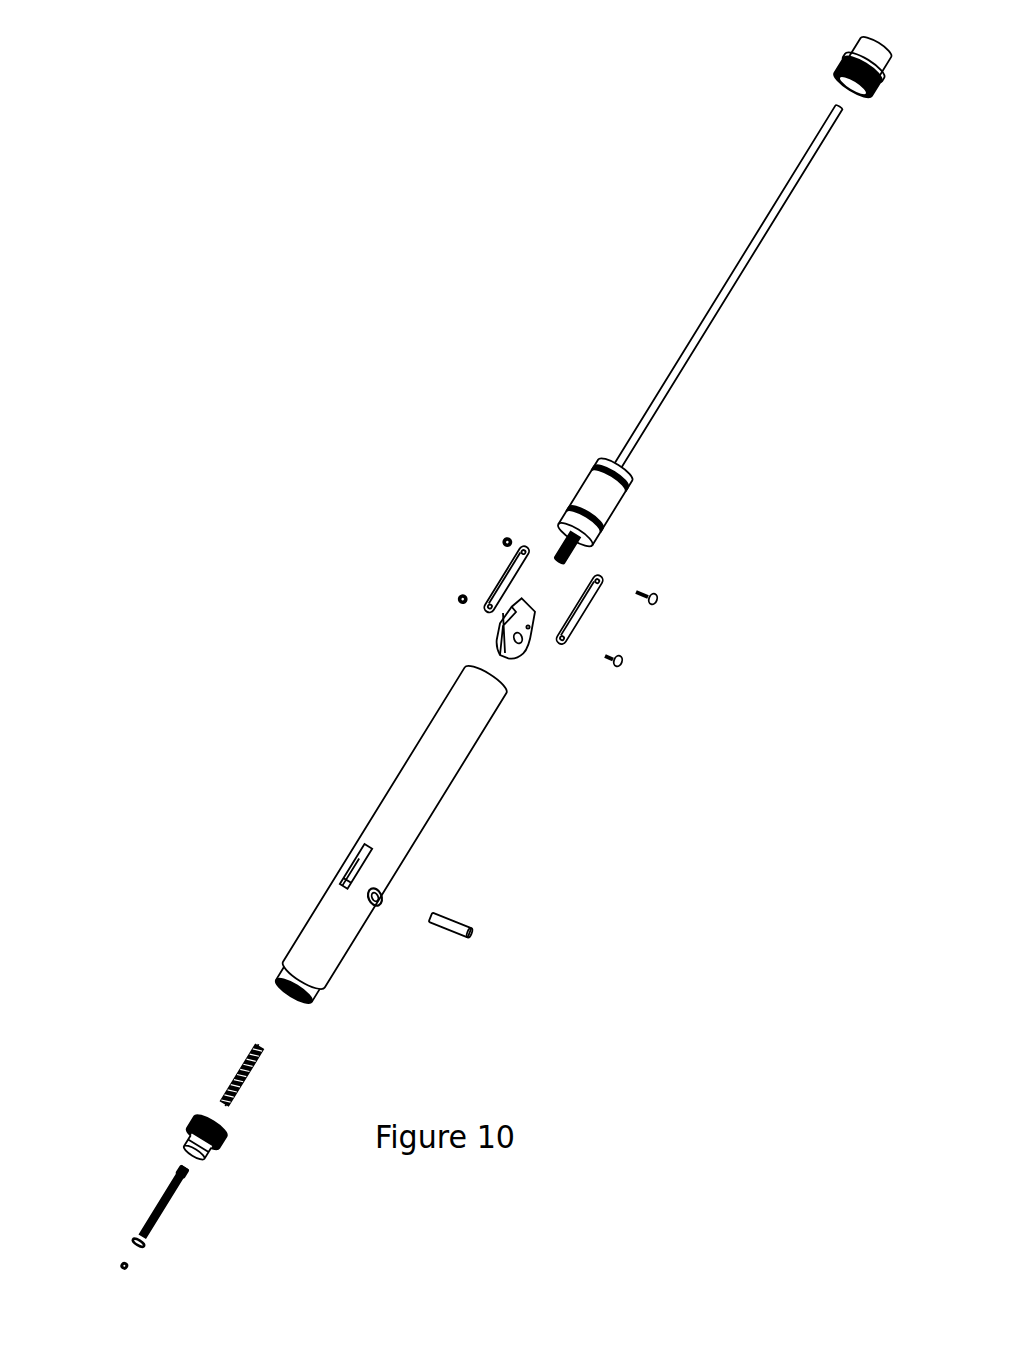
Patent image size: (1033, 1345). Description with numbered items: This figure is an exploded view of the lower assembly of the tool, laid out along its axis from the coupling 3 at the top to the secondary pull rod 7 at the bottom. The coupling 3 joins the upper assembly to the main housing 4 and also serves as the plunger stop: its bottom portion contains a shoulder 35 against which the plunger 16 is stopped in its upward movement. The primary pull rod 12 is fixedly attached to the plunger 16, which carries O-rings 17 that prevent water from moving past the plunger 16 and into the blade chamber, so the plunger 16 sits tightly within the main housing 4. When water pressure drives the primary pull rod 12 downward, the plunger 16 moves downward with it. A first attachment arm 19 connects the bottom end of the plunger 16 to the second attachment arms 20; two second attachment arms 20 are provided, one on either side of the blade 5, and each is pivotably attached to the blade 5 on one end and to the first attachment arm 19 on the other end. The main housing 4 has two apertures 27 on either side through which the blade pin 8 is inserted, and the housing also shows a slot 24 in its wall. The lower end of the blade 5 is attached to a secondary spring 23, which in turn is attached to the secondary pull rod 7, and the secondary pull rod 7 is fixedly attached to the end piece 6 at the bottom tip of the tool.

The coupling 3 is at (866, 53).
The shoulder 35 is at (834, 88).
The primary pull rod 12 is at (705, 320).
The plunger 16 is at (598, 508).
The O-rings 17 is at (560, 504).
The first attachment arm 19 is at (567, 550).
The second attachment arm 20 is at (506, 580).
The blade 5 is at (531, 634).
The main housing 4 is at (420, 817).
The slot 24 is at (355, 853).
The apertures 27 is at (381, 903).
The blade pin 8 is at (468, 934).
The secondary spring 23 is at (248, 1077).
The end piece 6 is at (187, 1145).
The secondary pull rod 7 is at (173, 1200).